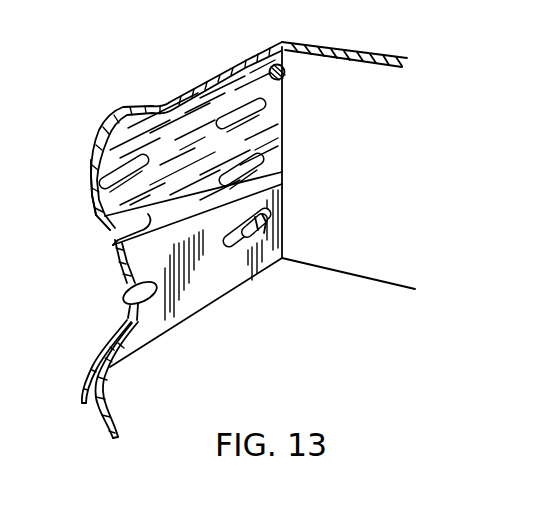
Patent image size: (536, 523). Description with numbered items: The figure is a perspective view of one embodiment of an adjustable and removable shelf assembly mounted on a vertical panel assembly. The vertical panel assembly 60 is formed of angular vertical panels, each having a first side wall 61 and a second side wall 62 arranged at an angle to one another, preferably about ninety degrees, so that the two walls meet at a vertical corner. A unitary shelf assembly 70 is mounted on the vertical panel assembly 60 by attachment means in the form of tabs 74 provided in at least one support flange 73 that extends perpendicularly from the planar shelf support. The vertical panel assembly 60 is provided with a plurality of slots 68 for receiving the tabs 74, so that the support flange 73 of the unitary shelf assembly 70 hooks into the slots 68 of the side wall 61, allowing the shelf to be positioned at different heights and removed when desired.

The vertical panel assembly 60 is at (329, 38).
The first side wall 61 is at (208, 91).
The second side wall 62 is at (353, 167).
The slots 68 is at (100, 200).
The unitary shelf assembly 70 is at (264, 338).
The support flange 73 is at (122, 278).
The tabs 74 is at (266, 235).